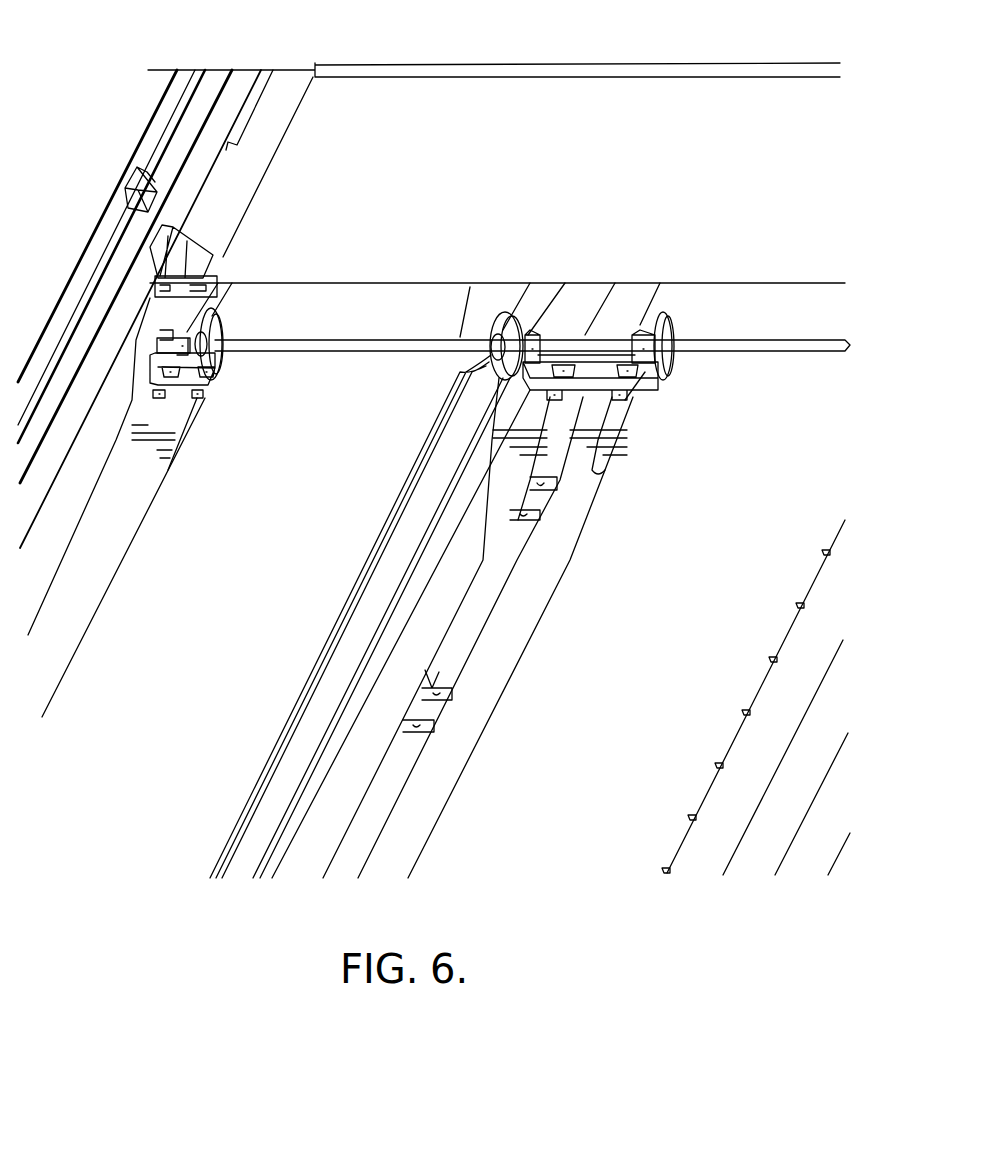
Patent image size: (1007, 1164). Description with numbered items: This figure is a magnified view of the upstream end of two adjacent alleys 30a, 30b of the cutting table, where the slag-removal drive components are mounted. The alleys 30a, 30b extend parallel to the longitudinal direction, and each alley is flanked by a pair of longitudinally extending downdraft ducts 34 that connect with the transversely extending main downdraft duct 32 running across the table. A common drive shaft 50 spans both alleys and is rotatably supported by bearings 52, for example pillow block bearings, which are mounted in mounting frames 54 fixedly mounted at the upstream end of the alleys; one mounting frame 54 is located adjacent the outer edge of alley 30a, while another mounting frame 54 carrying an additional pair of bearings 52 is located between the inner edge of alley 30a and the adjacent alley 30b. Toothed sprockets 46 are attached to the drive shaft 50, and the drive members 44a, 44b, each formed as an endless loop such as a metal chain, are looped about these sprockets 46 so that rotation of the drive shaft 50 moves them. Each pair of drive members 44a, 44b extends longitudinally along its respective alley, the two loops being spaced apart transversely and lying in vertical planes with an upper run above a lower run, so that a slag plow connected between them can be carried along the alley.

The main downdraft duct 32 is at (505, 100).
The bearing 52 is at (177, 333).
The sprocket 46 is at (222, 322).
The drive shaft 50 is at (352, 342).
The drive member 44b is at (457, 383).
The drive member 44a is at (197, 403).
The mounting frame 54 is at (205, 383).
The downdraft duct 34 is at (113, 550).
The alley 30a is at (215, 669).
The alley 30b is at (660, 704).